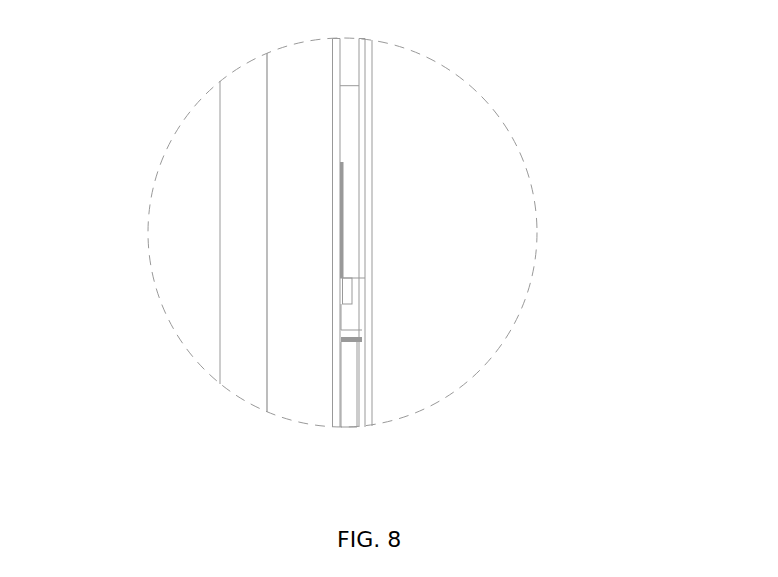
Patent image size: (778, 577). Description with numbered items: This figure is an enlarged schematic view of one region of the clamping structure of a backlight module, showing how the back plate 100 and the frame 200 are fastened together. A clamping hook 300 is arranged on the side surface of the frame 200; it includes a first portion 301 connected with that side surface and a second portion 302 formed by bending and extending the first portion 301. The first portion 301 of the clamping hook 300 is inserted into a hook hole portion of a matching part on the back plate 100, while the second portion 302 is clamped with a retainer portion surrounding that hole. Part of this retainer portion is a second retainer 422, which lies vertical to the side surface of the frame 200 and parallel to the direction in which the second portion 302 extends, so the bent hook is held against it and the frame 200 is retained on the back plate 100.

The back plate 100 is at (370, 86).
The frame 200 is at (297, 328).
The clamping hook 300 is at (524, 352).
The first portion 301 is at (348, 320).
The second portion 302 is at (355, 291).
The second retainer 422 is at (352, 180).